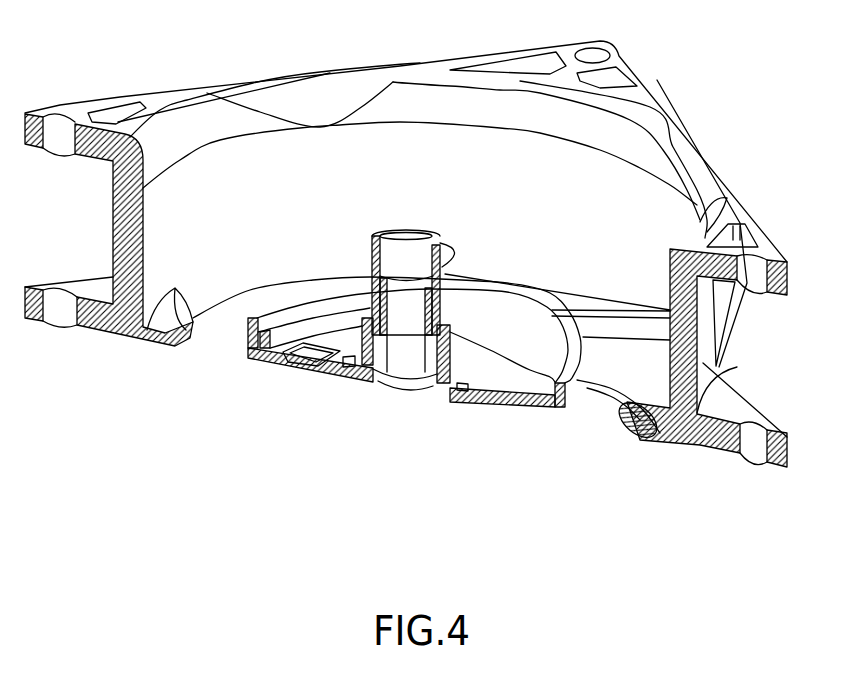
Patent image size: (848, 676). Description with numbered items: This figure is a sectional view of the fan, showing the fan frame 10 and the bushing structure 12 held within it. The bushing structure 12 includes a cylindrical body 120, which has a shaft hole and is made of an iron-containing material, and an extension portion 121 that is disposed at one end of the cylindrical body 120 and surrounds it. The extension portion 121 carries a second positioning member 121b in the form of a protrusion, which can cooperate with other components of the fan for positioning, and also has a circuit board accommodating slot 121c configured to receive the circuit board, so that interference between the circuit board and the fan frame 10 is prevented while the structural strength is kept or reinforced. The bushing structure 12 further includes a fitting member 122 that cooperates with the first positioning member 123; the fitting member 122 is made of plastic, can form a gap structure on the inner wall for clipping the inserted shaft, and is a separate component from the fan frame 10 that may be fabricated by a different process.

The fan frame 10 is at (643, 93).
The bushing structure 12 is at (417, 224).
The cylindrical body 120 is at (370, 252).
The extension portion 121 is at (460, 403).
The second positioning member 121b is at (250, 350).
The circuit board accommodating slot 121c is at (307, 363).
The fitting member 122 is at (388, 336).
The first positioning member 123 is at (373, 307).